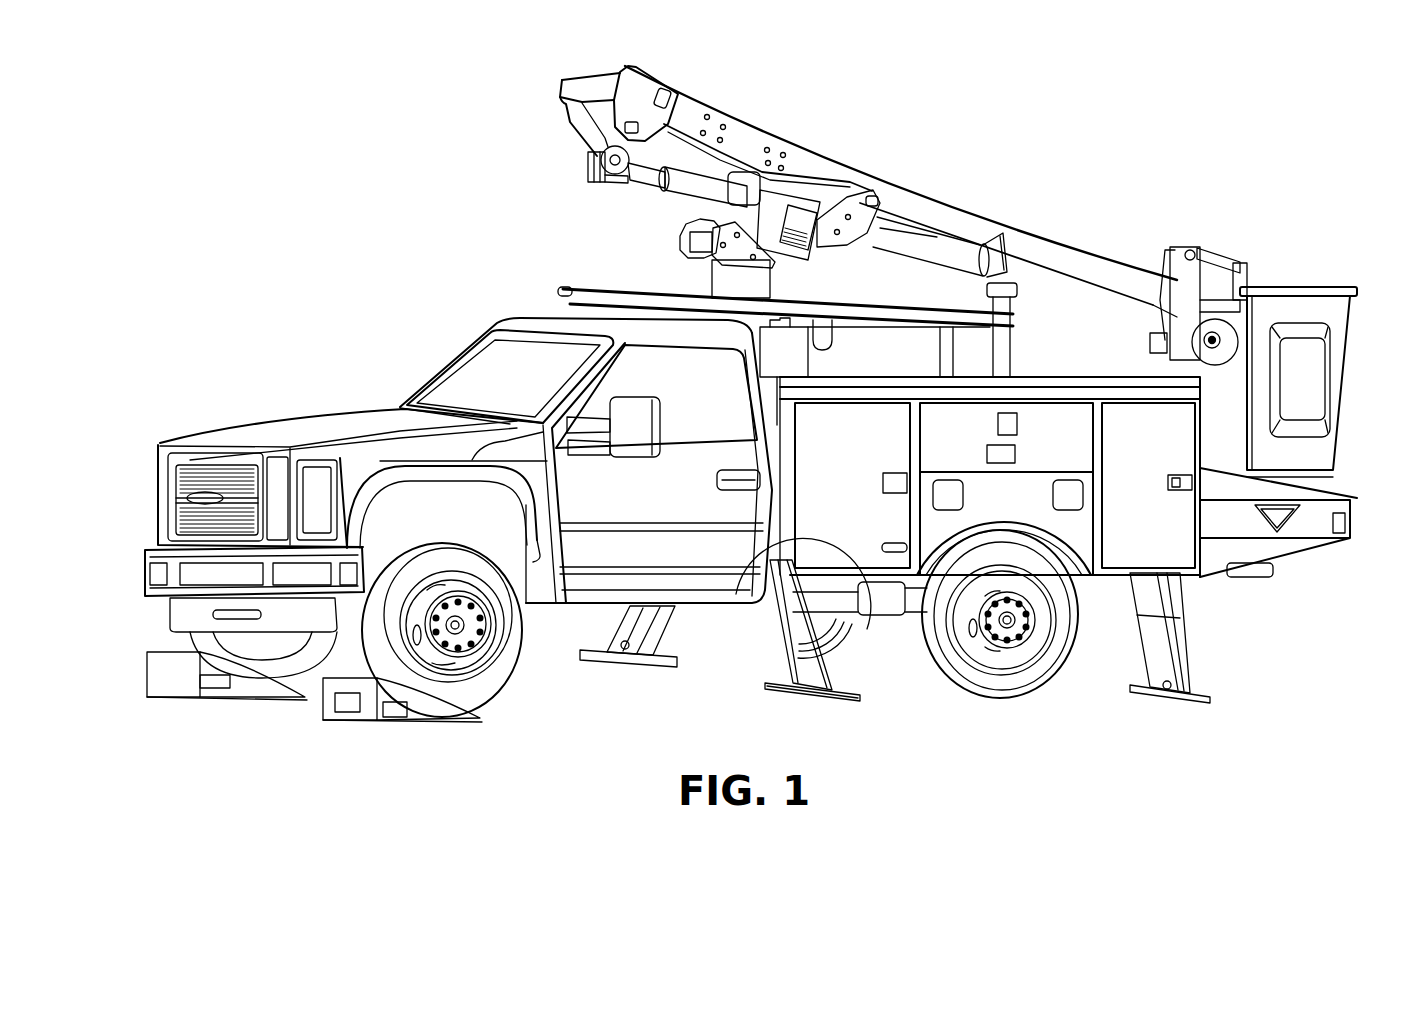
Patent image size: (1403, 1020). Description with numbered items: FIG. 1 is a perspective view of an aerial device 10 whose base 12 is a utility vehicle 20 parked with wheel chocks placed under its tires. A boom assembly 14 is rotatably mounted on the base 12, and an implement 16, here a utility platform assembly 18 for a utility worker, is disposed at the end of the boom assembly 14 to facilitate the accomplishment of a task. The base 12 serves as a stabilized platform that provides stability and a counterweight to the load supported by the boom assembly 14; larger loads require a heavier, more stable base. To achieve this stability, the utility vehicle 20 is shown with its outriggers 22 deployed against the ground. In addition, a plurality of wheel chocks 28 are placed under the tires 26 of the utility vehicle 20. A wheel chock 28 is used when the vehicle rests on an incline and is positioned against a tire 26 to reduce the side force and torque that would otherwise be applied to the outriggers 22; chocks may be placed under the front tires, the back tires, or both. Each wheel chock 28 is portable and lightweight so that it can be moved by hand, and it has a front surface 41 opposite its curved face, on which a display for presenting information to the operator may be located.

The aerial device 10 is at (1133, 101).
The base 12 is at (421, 300).
The boom assembly 14 is at (903, 188).
The implement 16 is at (1214, 226).
The utility platform assembly 18 is at (1306, 284).
The utility vehicle 20 is at (348, 416).
The outriggers 22 is at (1180, 676).
The tire 26 is at (477, 659).
The wheel chock 28 is at (443, 728).
The front surface 41 is at (353, 721).